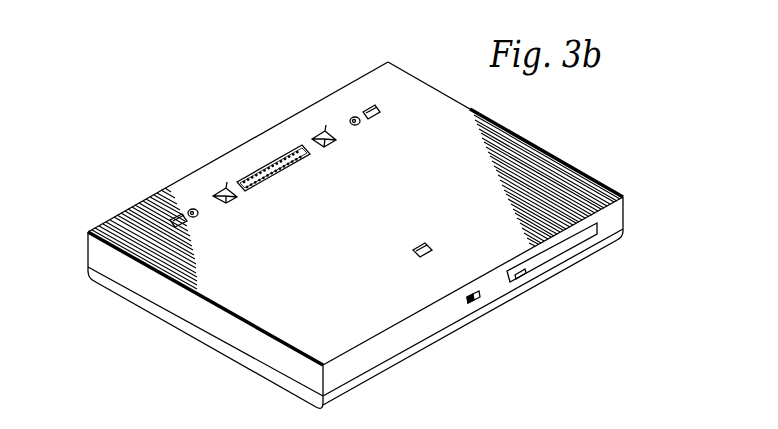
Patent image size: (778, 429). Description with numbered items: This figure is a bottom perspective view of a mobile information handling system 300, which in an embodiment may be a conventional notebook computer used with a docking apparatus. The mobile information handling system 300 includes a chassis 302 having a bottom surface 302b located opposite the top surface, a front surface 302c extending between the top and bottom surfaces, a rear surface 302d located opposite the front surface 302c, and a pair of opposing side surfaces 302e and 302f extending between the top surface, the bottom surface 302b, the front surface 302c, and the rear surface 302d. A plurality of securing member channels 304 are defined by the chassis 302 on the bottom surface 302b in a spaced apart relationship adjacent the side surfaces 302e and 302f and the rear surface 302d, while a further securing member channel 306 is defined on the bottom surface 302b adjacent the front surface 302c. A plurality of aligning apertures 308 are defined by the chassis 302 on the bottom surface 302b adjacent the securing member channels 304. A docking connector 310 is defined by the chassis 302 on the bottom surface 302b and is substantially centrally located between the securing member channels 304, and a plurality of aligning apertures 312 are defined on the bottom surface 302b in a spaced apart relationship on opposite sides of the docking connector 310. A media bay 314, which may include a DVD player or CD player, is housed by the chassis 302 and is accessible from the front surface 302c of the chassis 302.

The mobile information handling system 300 is at (147, 75).
The chassis 302 is at (143, 198).
The bottom surface 302b is at (409, 80).
The front surface 302c is at (425, 331).
The rear surface 302d is at (349, 82).
The side surface 302e is at (505, 124).
The side surface 302f is at (175, 305).
The securing member channels 304 is at (382, 107).
The securing member channel 306 is at (412, 250).
The aligning apertures 308 is at (361, 122).
The docking connector 310 is at (288, 170).
The aligning apertures 312 is at (222, 190).
The media bay 314 is at (548, 257).